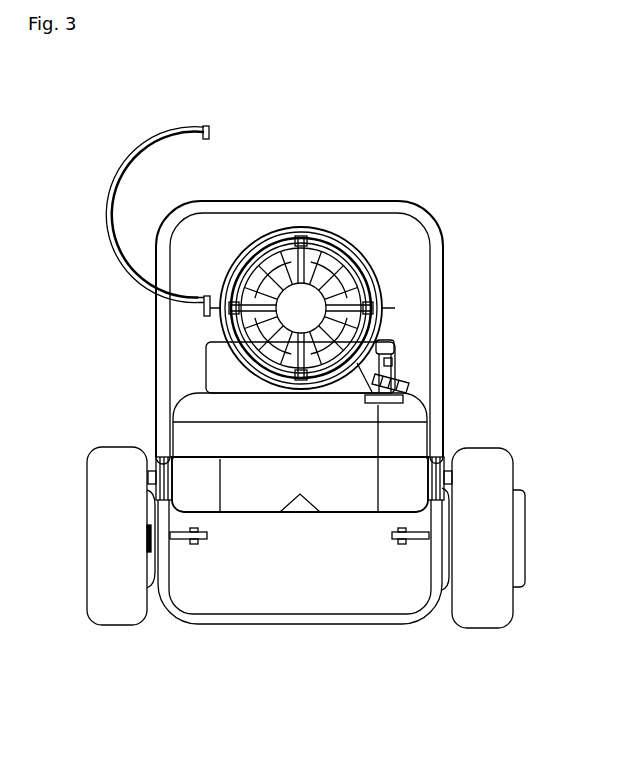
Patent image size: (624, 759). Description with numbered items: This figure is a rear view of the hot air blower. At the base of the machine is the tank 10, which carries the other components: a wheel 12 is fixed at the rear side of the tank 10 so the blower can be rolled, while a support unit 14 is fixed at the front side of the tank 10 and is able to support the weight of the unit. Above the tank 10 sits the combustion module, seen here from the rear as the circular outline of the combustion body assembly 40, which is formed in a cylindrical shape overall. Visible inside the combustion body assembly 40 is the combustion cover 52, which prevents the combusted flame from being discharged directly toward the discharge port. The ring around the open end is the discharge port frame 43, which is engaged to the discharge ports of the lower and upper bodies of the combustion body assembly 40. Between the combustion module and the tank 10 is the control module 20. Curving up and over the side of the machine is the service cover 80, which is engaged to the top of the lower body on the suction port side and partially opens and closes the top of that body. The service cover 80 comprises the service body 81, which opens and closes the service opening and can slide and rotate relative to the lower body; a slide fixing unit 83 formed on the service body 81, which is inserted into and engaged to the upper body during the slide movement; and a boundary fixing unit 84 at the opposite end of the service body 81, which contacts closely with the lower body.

The tank 10 is at (420, 428).
The wheel 12 is at (498, 463).
The support unit 14 is at (290, 622).
The control module 20 is at (410, 343).
The combustion body assembly 40 is at (332, 268).
The discharge port frame 43 is at (350, 250).
The combustion cover 52 is at (304, 306).
The service cover 80 is at (133, 198).
The service body 81 is at (124, 253).
The slide fixing unit 83 is at (128, 215).
The boundary fixing unit 84 is at (209, 126).